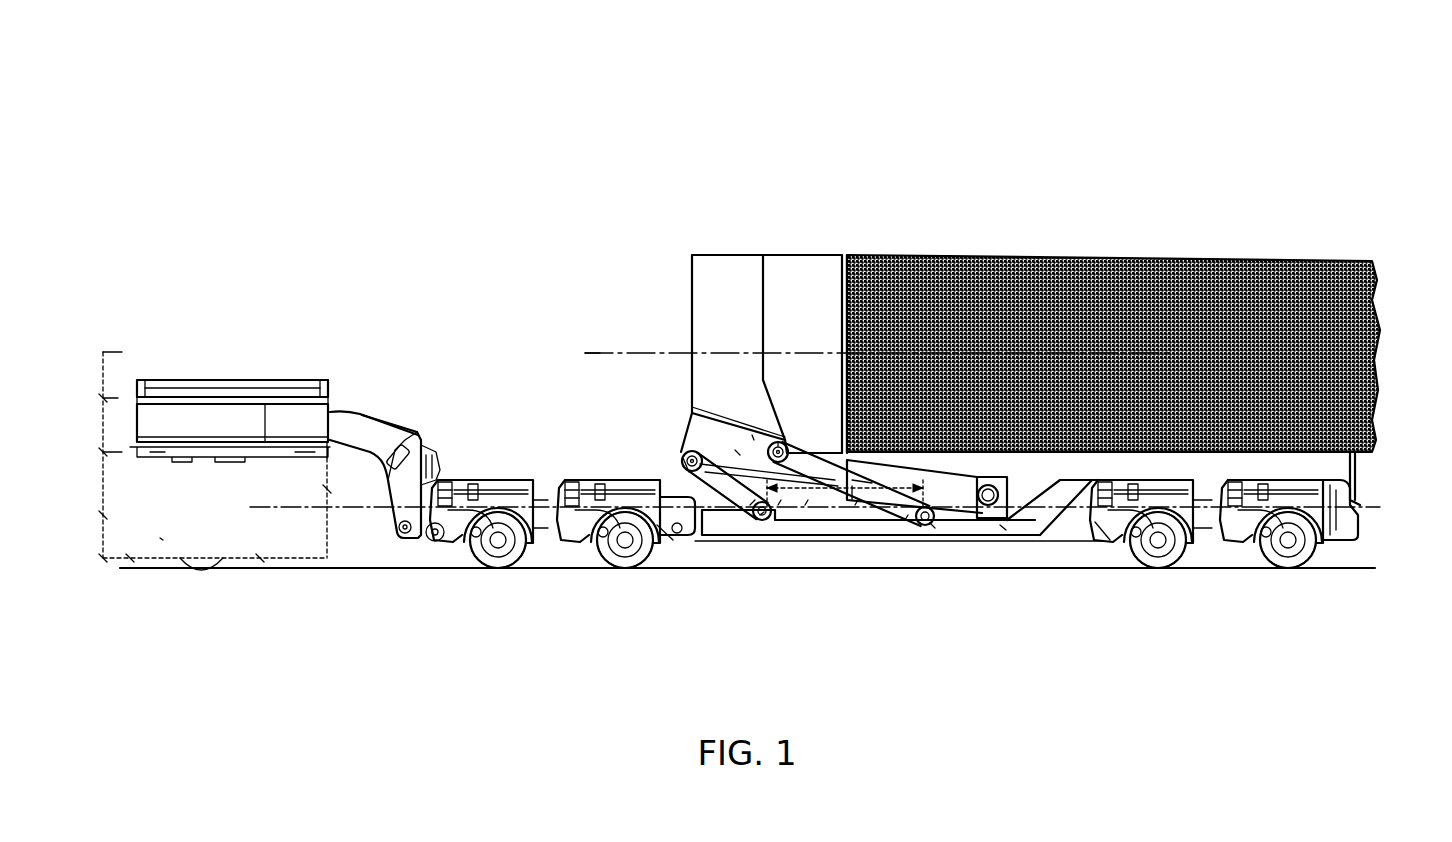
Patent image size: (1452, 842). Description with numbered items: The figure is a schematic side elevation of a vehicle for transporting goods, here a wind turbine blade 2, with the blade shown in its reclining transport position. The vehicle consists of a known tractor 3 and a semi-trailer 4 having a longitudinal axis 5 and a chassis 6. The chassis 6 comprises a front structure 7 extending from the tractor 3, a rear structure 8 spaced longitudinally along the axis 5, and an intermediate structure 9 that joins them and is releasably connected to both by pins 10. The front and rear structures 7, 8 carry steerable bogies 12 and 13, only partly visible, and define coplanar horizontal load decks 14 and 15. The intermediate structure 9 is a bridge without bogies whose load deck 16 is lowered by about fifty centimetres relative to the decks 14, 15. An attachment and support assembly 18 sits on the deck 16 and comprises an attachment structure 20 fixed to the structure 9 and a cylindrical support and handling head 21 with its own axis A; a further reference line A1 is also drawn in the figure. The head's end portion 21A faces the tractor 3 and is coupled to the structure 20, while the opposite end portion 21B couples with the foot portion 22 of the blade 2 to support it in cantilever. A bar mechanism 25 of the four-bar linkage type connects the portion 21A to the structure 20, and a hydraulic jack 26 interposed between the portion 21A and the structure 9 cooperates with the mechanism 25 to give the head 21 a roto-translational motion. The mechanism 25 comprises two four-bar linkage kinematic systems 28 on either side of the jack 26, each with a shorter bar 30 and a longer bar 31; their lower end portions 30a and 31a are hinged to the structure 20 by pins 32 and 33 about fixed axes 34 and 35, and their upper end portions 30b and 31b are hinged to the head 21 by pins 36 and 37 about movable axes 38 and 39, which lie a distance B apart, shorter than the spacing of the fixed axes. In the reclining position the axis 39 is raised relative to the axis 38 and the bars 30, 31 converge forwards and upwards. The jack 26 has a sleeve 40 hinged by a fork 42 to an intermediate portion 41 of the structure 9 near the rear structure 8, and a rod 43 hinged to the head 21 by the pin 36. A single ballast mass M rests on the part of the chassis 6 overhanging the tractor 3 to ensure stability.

The wind turbine blade 2 is at (1130, 268).
The tractor 3 is at (160, 538).
The semi-trailer 4 is at (572, 410).
The longitudinal axis 5 is at (1360, 497).
The chassis 6 is at (517, 447).
The front structure 7 is at (553, 553).
The rear structure 8 is at (1223, 555).
The intermediate structure 9 is at (813, 545).
The pins 10 is at (673, 533).
The steerable bogies 12 is at (490, 573).
The steerable bogies 13 is at (1155, 573).
The load deck 14 is at (607, 473).
The load deck 15 is at (1285, 475).
The load deck 16 is at (1020, 508).
The attachment and support assembly 18 is at (708, 222).
The attachment structure 20 is at (745, 515).
The support and handling head 21 is at (757, 247).
The end portion 21A is at (708, 267).
The end portion 21B is at (805, 270).
The foot portion 22 is at (855, 305).
The bar mechanism 25 is at (855, 505).
The hydraulic jack 26 is at (942, 453).
The four-bar linkage kinematic systems 28 is at (843, 457).
The bar 30 is at (718, 452).
The lower end portion 30a is at (778, 505).
The end portion 30b is at (688, 452).
The bar 31 is at (817, 445).
The lower end portion 31a is at (930, 522).
The end portion 31b is at (775, 445).
The pin 32 is at (750, 505).
The pin 33 is at (933, 525).
The fixed hinge axis 34 is at (760, 515).
The fixed hinge axis 35 is at (905, 520).
The pin 36 is at (687, 460).
The pin 37 is at (780, 450).
The movable hinge axis 38 is at (735, 450).
The movable hinge axis 39 is at (752, 435).
The sleeve 40 is at (995, 478).
The intermediate portion 41 is at (1003, 527).
The fork 42 is at (1000, 477).
The rod 43 is at (805, 505).
The axis of the head A is at (865, 495).
The axis A1 is at (594, 353).
The distance B is at (752, 518).
The ballast mass M is at (232, 395).